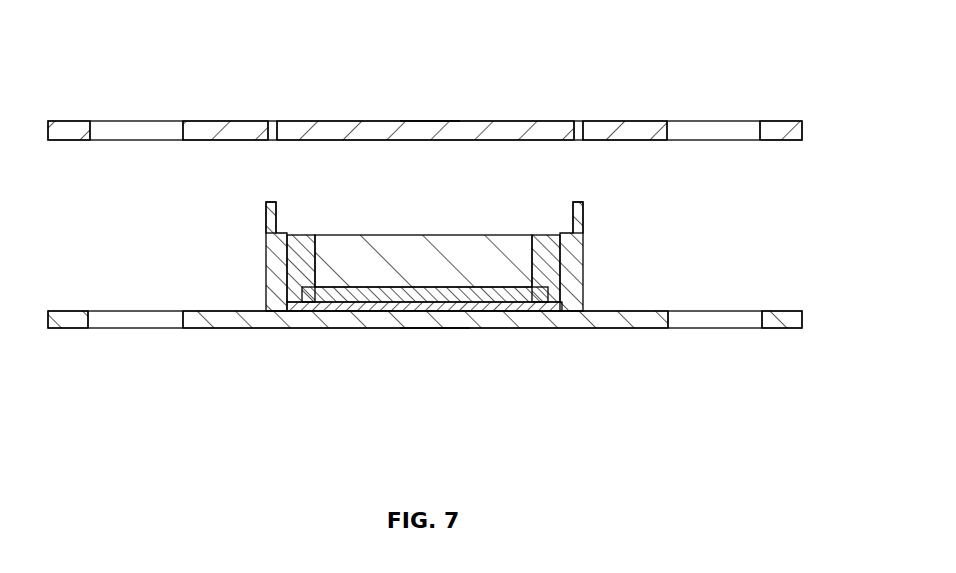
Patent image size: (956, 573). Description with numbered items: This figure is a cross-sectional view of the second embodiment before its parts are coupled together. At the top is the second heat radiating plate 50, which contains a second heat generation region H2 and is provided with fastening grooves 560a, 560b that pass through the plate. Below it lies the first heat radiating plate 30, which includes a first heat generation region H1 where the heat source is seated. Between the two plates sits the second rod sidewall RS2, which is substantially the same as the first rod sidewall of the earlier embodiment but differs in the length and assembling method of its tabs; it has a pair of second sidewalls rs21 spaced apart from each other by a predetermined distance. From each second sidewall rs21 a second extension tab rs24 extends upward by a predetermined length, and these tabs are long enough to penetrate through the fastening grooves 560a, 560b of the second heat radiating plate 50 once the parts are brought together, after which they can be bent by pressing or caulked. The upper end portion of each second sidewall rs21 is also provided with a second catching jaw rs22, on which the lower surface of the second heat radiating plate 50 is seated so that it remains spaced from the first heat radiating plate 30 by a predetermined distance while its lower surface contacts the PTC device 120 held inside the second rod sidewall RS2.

The second heat radiating plate 50 is at (792, 86).
The fastening groove 560a is at (270, 121).
The fastening groove 560b is at (578, 121).
The second heat generation region H2 is at (431, 130).
The first heat radiating plate 30 is at (786, 362).
The first heat generation region H1 is at (433, 315).
The second sidewall rs21 is at (582, 268).
The second catching jaw rs22 is at (568, 240).
The second extension tab rs24 is at (580, 210).
The PTC device 120 is at (373, 270).
The second rod sidewall RS2 is at (246, 275).